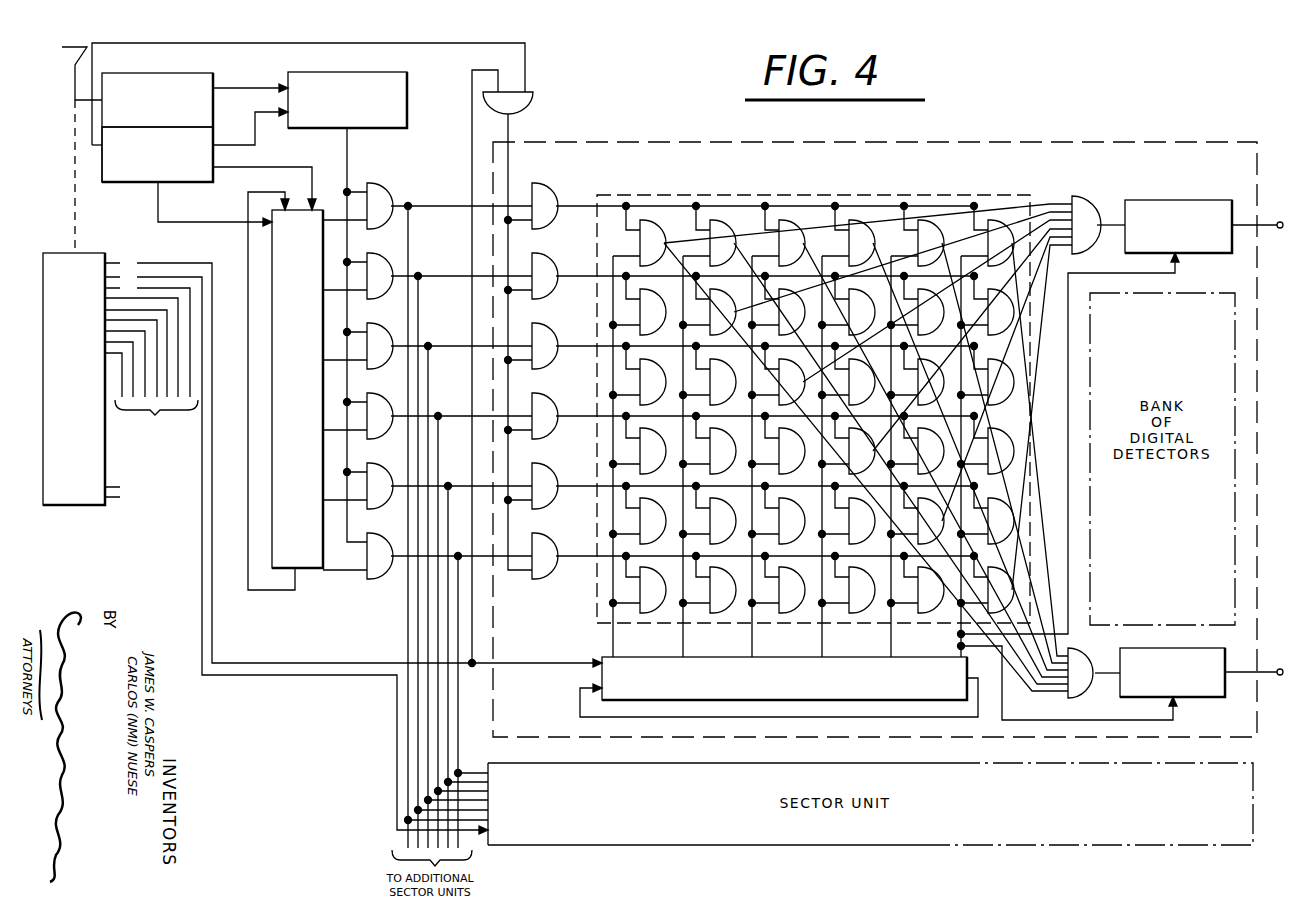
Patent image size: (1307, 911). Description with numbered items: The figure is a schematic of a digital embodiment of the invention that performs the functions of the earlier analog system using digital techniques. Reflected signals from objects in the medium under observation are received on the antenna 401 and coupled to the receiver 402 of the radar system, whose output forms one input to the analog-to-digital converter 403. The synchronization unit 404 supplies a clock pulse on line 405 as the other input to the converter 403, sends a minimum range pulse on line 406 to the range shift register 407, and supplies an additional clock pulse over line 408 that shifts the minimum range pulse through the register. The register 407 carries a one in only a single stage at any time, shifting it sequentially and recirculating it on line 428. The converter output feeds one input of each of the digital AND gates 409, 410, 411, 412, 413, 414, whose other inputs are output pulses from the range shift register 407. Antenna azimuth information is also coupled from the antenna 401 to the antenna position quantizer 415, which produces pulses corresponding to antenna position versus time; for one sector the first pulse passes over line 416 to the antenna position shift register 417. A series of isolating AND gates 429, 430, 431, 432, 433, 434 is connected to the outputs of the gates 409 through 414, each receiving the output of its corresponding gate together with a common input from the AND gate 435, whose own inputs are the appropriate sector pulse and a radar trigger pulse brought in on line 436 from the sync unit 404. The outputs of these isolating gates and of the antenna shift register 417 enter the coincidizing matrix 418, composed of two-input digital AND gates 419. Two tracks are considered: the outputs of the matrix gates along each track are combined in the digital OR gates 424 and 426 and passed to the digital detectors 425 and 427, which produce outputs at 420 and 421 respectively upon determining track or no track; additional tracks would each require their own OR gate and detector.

The antenna 401 is at (62, 55).
The receiver 402 is at (175, 73).
The analog-to-digital converter 403 is at (358, 76).
The synchronization unit 404 is at (142, 184).
The line 405 is at (272, 110).
The line 406 is at (293, 170).
The range shift register 407 is at (305, 575).
The line 408 is at (228, 223).
The digital AND gate 409 is at (387, 196).
The digital AND gate 410 is at (377, 260).
The digital AND gate 411 is at (377, 330).
The digital AND gate 412 is at (377, 400).
The digital AND gate 413 is at (377, 470).
The digital AND gate 414 is at (377, 540).
The antenna position quantizer 415 is at (80, 252).
The line 416 is at (556, 662).
The antenna position shift register 417 is at (658, 656).
The coincidizing matrix 418 is at (708, 194).
The AND gate 419 is at (665, 224).
The output 420 is at (1290, 214).
The output 421 is at (1281, 676).
The digital OR gate 424 is at (1090, 202).
The digital detector 425 is at (1158, 200).
The digital OR gate 426 is at (1088, 653).
The digital detector 427 is at (1196, 698).
The line 428 is at (262, 590).
The AND gate 429 is at (547, 199).
The AND gate 430 is at (547, 269).
The AND gate 431 is at (547, 339).
The AND gate 432 is at (547, 409).
The AND gate 433 is at (547, 479).
The AND gate 434 is at (547, 549).
The AND gate 435 is at (526, 104).
The line 436 is at (527, 74).